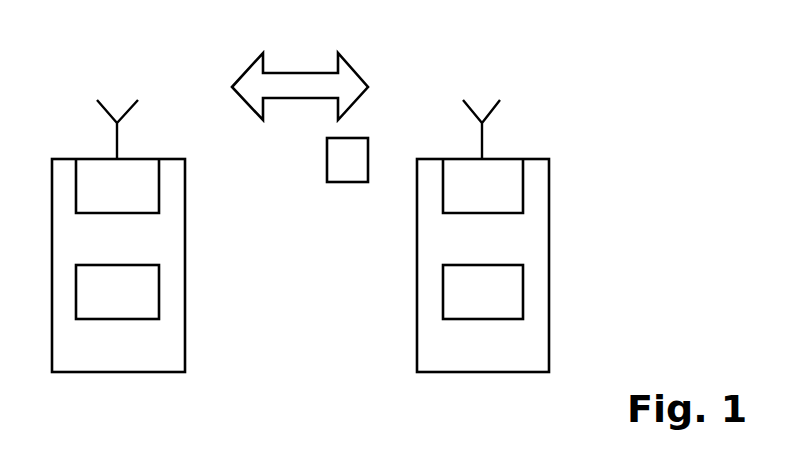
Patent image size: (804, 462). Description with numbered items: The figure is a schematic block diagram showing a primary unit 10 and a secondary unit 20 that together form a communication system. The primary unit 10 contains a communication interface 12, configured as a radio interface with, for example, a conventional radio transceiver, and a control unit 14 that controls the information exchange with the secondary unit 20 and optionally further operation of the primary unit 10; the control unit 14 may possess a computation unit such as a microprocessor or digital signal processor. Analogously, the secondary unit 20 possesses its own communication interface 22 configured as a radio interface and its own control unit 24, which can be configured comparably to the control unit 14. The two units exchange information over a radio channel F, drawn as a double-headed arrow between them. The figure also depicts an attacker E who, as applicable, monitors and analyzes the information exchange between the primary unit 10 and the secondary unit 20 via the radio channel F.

The primary unit 10 is at (527, 353).
The communication interface 12 is at (513, 195).
The control unit 14 is at (513, 300).
The secondary unit 20 is at (160, 353).
The communication interface 22 is at (148, 195).
The control unit 24 is at (148, 300).
The radio channel F is at (298, 85).
The attacker E is at (347, 160).